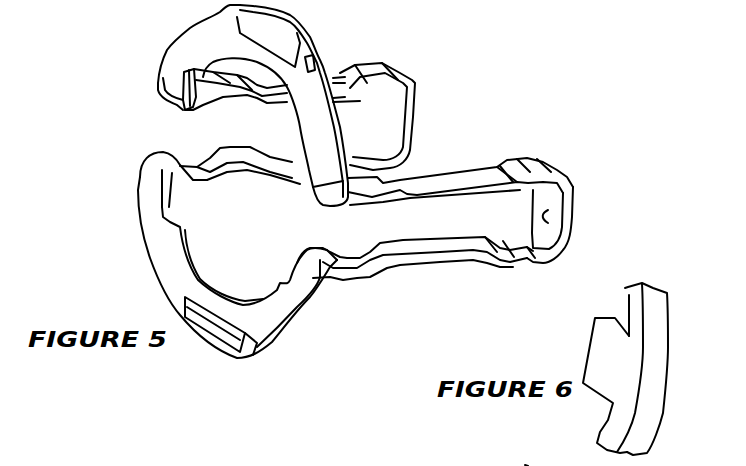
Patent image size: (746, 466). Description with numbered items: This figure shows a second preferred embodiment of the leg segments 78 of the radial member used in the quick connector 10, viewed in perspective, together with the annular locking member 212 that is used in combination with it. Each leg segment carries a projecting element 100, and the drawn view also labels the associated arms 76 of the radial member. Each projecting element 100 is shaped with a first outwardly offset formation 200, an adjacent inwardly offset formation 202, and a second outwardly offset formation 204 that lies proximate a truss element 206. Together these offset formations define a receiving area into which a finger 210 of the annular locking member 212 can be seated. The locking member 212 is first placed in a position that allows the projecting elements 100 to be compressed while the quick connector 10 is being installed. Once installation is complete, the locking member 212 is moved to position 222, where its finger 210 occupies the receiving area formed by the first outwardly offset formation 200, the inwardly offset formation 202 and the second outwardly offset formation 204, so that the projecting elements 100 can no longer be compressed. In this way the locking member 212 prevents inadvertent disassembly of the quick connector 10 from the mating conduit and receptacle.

In FIG. 5, the quick connector 10 is at (188, 377).
In FIG. 5, the resilient arms 76 is at (318, 132).
In FIG. 5, the leg segments 78 is at (391, 46).
In FIG. 5, the projecting element 100 is at (540, 160).
In FIG. 5, the first outwardly offset formation 200 is at (386, 182).
In FIG. 5, the inwardly offset formation 202 is at (433, 250).
In FIG. 5, the second outwardly offset formation 204 is at (528, 160).
In FIG. 5, the truss element 206 is at (548, 215).
In FIG. 6, the finger 210 is at (598, 347).
In FIG. 6, the annular locking member 212 is at (627, 293).
In FIG. 6, the position 222 is at (525, 465).